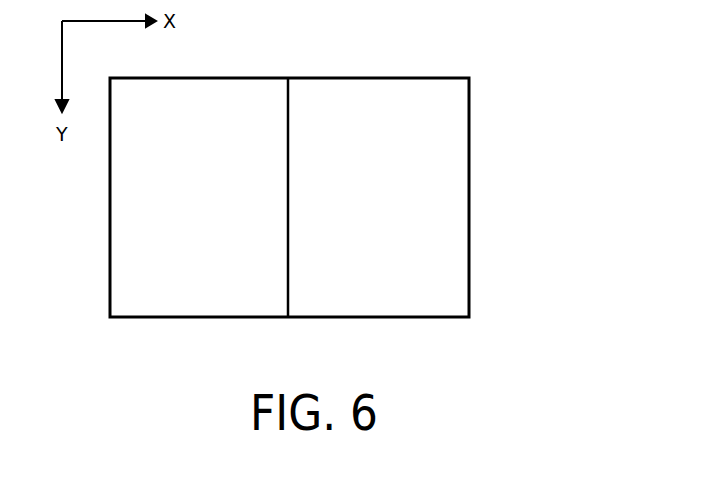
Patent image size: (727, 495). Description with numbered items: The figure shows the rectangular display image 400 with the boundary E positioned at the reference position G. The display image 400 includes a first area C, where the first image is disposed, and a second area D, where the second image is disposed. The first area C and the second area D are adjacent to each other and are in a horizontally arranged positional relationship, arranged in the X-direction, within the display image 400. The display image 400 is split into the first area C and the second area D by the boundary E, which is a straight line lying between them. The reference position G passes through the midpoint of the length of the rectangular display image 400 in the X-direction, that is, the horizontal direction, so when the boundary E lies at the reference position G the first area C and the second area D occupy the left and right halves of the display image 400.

The display image 400 is at (469, 135).
The reference position G is at (284, 65).
The boundary E is at (285, 103).
The first area C is at (135, 233).
The second area D is at (440, 240).